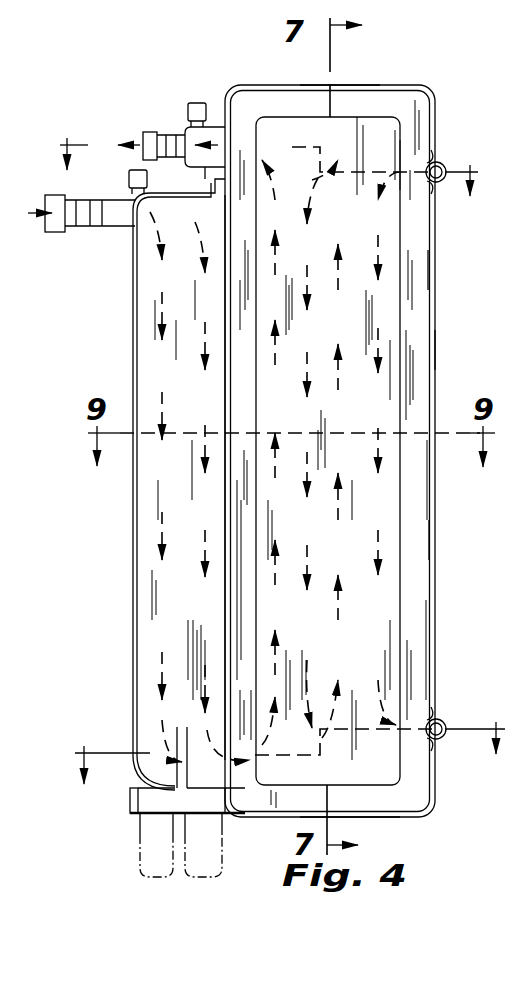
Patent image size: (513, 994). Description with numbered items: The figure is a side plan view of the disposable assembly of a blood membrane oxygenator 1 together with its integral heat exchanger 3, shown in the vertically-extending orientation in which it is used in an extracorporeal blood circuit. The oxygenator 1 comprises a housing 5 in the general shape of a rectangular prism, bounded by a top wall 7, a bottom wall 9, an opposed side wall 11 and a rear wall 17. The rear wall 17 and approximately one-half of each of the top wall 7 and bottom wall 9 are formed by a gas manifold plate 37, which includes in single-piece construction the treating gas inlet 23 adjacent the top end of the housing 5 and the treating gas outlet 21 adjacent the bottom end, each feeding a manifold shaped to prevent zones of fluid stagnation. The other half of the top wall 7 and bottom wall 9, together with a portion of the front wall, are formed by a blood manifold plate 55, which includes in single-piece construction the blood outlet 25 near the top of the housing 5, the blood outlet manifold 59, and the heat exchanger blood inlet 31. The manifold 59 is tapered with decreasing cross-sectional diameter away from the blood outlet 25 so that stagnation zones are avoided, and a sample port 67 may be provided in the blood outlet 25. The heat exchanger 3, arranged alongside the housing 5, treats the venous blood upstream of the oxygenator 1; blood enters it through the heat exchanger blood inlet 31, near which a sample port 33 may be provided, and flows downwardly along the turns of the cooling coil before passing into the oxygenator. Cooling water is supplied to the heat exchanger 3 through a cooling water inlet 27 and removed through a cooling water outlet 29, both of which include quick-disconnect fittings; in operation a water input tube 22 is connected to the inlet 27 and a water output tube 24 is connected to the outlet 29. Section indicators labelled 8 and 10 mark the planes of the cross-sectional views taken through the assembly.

The blood membrane oxygenator 1 is at (405, 83).
The integral heat exchanger 3 is at (130, 576).
The housing 5 is at (432, 541).
The top wall 7 is at (345, 88).
The section line 8- 8 is at (270, 154).
The bottom wall 9 is at (368, 818).
The section line 10- 10 is at (286, 734).
The side wall 11 is at (386, 640).
The rear wall 17 is at (436, 351).
The treating gas outlet 21 is at (442, 740).
The water input tube 22 is at (140, 860).
The treating gas inlet 23 is at (440, 163).
The water output tube 24 is at (222, 877).
The blood outlet 25 is at (167, 132).
The cooling water inlet 27 is at (130, 798).
The cooling water outlet 29 is at (205, 805).
The heat exchanger blood inlet 31 is at (74, 227).
The sample port 33 is at (131, 178).
The gas manifold plate 37 is at (430, 262).
The blood manifold plate 55 is at (152, 472).
The blood outlet manifold 59 is at (213, 165).
The sample port 67 is at (198, 103).